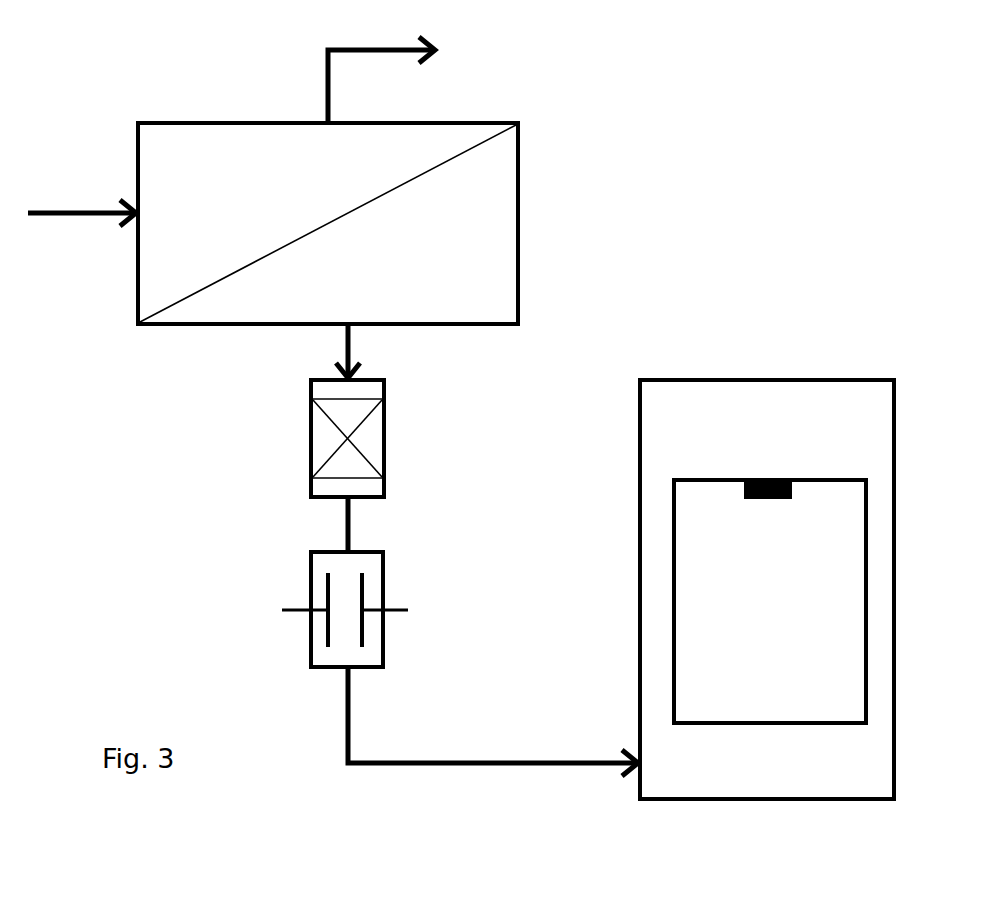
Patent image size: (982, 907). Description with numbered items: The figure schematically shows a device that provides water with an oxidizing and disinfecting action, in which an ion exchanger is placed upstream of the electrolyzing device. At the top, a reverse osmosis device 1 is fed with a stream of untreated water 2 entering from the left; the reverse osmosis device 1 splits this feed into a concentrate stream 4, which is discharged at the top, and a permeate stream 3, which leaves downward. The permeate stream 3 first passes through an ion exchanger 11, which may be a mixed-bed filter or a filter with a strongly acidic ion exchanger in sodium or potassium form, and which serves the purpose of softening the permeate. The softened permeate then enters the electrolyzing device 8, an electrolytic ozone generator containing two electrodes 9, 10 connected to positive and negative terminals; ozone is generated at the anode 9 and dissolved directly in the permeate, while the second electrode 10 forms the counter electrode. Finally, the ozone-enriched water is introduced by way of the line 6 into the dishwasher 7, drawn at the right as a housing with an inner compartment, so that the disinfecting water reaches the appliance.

The reverse osmosis device 1 is at (230, 122).
The stream of untreated water 2 is at (103, 210).
The permeate stream 3 is at (364, 352).
The concentrate stream 4 is at (418, 38).
The line 6 is at (458, 748).
The dishwasher 7 is at (767, 370).
The electrolyzing device 8 is at (307, 548).
The anode 9 is at (325, 590).
The electrode 10 is at (368, 598).
The ion exchanger 11 is at (393, 441).